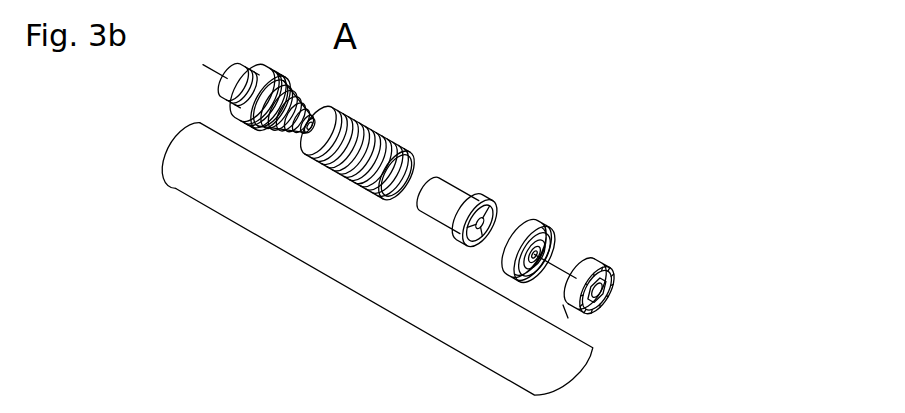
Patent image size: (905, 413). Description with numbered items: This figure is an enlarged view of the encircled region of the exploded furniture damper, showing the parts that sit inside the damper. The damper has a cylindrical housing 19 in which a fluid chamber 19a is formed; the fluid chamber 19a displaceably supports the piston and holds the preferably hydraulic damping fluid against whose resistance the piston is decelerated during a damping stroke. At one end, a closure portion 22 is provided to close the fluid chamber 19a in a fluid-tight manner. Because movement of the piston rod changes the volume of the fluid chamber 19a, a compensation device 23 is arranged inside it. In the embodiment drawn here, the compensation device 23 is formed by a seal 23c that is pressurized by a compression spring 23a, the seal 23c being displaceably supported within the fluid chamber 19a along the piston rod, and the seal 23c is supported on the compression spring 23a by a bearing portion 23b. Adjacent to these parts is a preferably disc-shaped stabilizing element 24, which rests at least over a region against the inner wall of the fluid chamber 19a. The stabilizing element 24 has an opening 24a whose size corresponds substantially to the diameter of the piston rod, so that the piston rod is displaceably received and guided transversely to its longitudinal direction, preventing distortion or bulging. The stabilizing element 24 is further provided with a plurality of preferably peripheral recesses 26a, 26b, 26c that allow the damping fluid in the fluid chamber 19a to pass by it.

The housing 19 is at (205, 188).
The fluid chamber 19a is at (158, 135).
The closure portion 22 is at (277, 68).
The compensation device 23 is at (402, 227).
The compression spring 23a is at (330, 170).
The bearing portion 23b is at (450, 212).
The seal 23c is at (503, 270).
The stabilizing element 24 is at (621, 254).
The opening 24a is at (622, 280).
The recess 26a is at (578, 254).
The recess 26b is at (623, 296).
The recess 26c is at (568, 318).